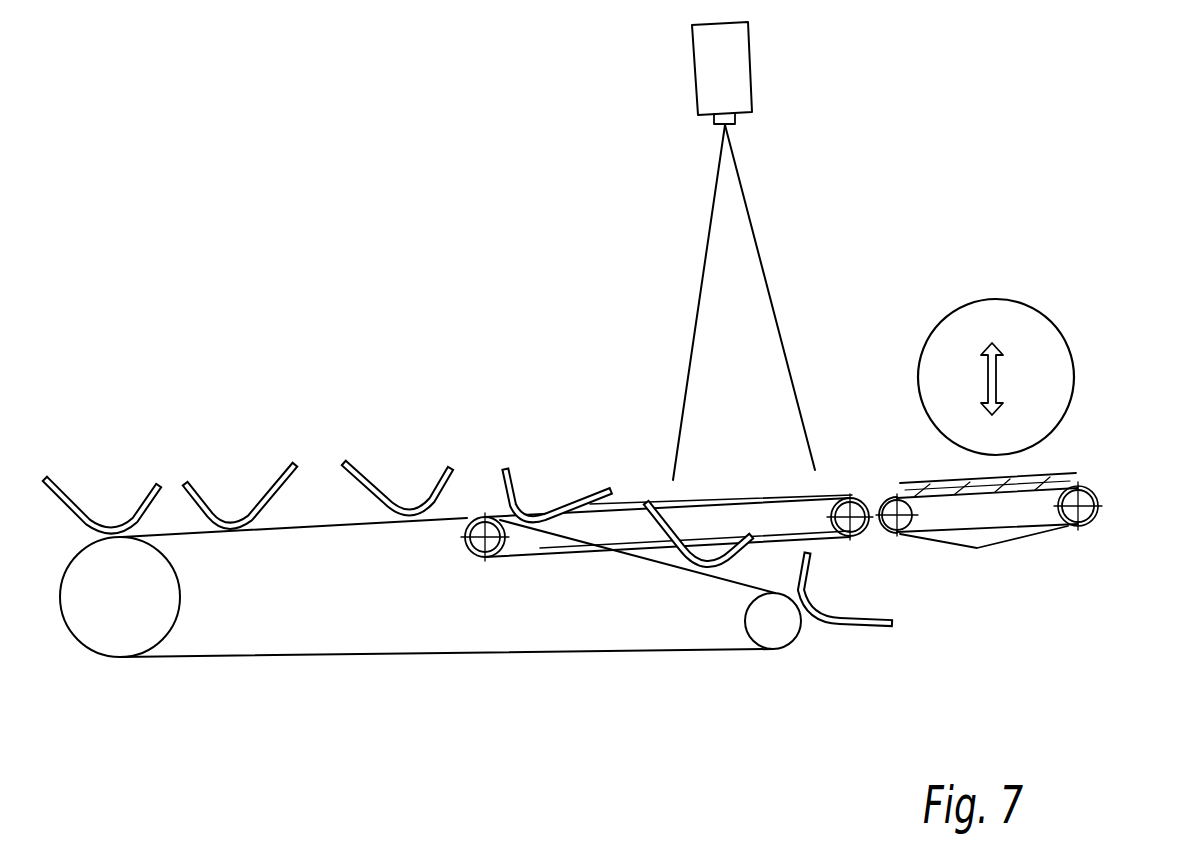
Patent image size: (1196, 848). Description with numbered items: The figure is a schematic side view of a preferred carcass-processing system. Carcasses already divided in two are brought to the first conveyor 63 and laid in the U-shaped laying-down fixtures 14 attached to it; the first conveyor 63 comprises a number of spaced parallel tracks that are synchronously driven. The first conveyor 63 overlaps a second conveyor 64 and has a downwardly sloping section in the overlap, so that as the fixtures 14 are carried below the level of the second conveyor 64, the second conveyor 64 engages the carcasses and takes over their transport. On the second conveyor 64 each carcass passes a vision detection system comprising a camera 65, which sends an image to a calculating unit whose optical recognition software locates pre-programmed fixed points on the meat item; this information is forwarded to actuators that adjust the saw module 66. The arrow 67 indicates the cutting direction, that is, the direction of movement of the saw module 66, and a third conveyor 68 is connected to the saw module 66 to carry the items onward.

The U-shaped laying-down fixtures 14 is at (65, 465).
The first conveyor 63 is at (258, 668).
The second conveyor 64 is at (633, 503).
The camera 65 is at (767, 60).
The saw module 66 is at (1023, 295).
The arrow 67 is at (1003, 382).
The third conveyor 68 is at (1033, 553).